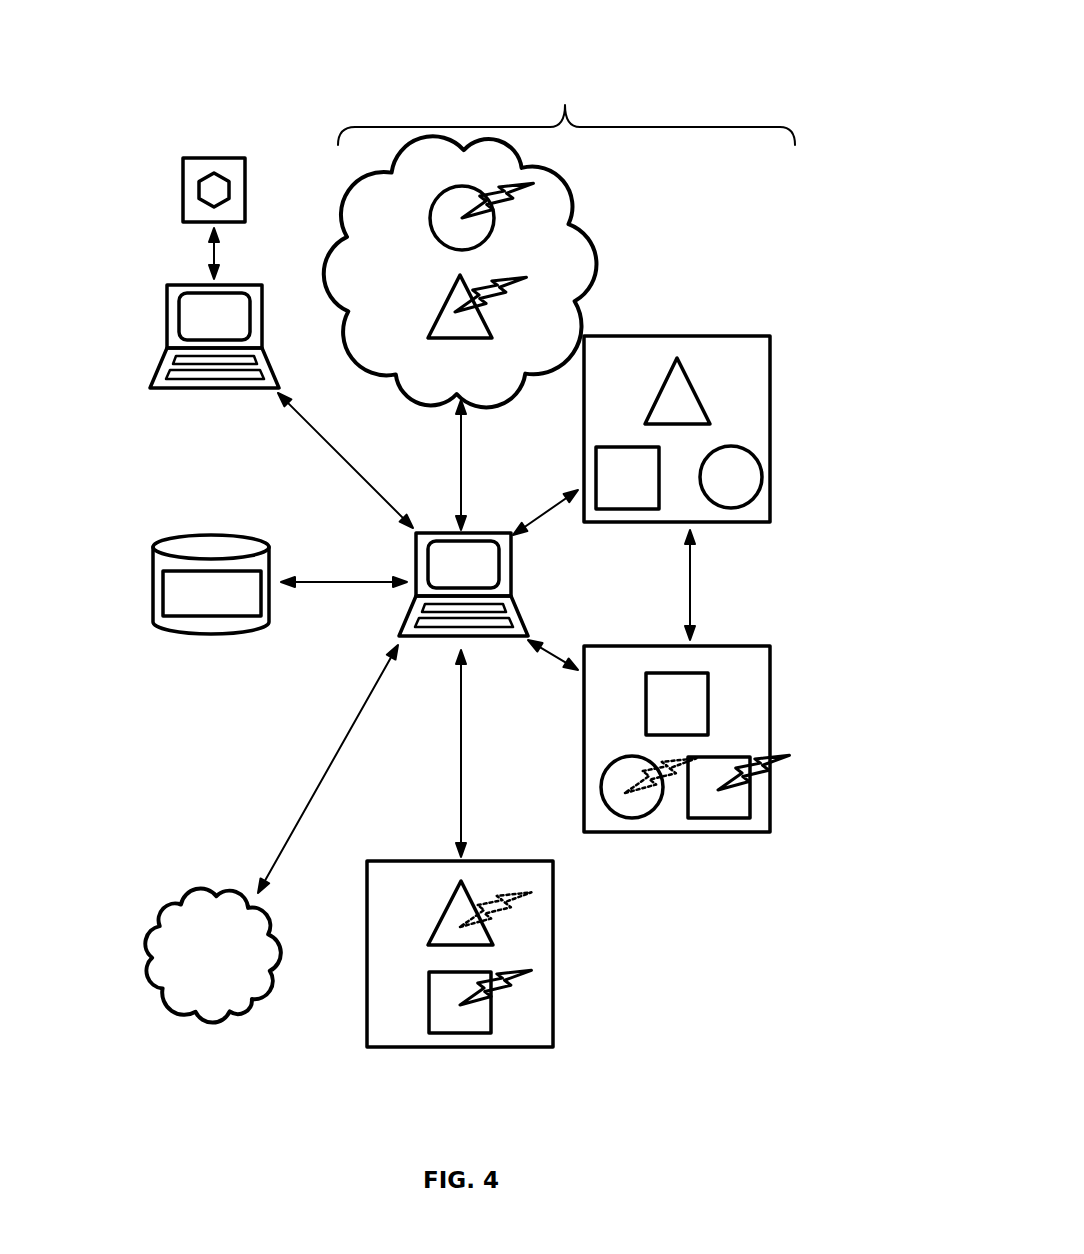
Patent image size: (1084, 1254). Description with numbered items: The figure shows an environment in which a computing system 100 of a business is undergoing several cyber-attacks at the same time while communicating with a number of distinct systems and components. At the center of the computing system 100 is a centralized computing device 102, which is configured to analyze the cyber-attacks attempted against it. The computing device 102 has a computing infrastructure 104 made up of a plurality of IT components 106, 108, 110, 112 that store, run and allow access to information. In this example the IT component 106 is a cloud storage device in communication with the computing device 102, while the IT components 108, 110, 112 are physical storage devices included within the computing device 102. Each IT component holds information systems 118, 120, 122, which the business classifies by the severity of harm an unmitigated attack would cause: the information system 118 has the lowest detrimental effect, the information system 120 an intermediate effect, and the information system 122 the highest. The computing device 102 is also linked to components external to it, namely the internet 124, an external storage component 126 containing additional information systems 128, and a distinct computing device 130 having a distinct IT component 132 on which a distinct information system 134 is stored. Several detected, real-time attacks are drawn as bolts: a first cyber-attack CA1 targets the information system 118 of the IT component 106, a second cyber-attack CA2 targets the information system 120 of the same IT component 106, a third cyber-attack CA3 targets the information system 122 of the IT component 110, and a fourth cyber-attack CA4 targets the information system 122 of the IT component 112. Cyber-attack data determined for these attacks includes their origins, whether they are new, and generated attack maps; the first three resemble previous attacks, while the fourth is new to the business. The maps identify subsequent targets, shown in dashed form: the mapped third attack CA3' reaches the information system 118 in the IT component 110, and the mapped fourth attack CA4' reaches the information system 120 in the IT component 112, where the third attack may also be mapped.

The computing system 100 is at (622, 58).
The computing device 102 is at (482, 532).
The computing infrastructure 104 is at (566, 106).
The IT component 106 is at (355, 207).
The IT component 108 is at (762, 336).
The IT component 110 is at (748, 646).
The IT component 112 is at (380, 861).
The information system 118 is at (495, 218).
The information system 120 is at (488, 330).
The information system 122 is at (645, 509).
The internet 124 is at (201, 896).
The external storage component 126 is at (206, 635).
The additional information systems 128 is at (182, 620).
The distinct computing device 130 is at (215, 390).
The distinct IT component 132 is at (223, 158).
The distinct information system 134 is at (200, 190).
The first cyber-attack CA1 is at (500, 192).
The second cyber-attack CA2 is at (505, 290).
The third cyber-attack CA3 is at (793, 772).
The propagated third change action CA3' is at (605, 762).
The fourth cyber-attack CA4 is at (533, 987).
The propagated fourth and third change actions CA4' is at (627, 916).